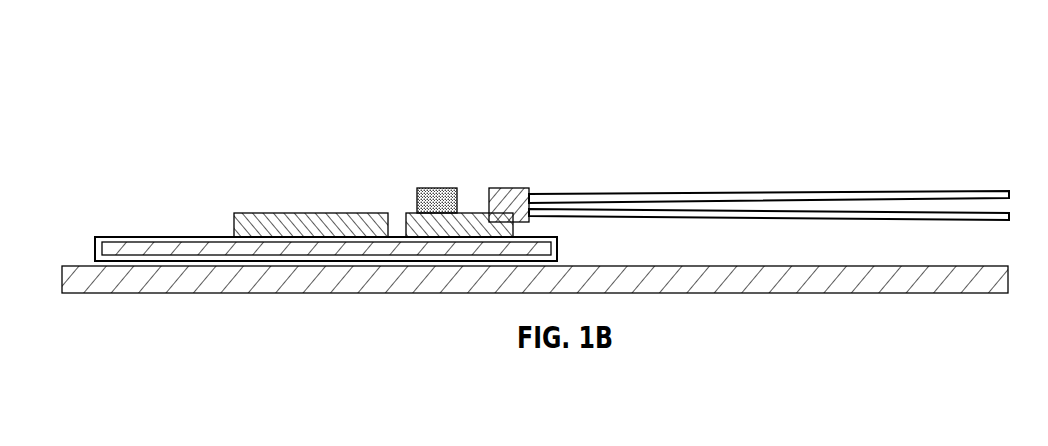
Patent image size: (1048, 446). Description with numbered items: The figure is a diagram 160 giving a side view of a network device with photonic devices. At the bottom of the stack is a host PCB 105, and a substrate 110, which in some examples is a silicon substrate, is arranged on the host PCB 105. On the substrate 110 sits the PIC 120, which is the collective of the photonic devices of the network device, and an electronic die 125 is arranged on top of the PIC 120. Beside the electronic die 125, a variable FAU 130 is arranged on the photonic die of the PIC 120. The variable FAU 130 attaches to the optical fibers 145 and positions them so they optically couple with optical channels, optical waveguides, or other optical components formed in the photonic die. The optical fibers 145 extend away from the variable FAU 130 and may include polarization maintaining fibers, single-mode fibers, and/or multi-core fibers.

The diagram 160 is at (206, 58).
The host PCB 105 is at (900, 293).
The substrate 110 is at (130, 237).
The PIC 120 is at (478, 213).
The electronic die 125 is at (432, 187).
The variable FAU 130 is at (512, 187).
The optical fibers 145 is at (895, 217).